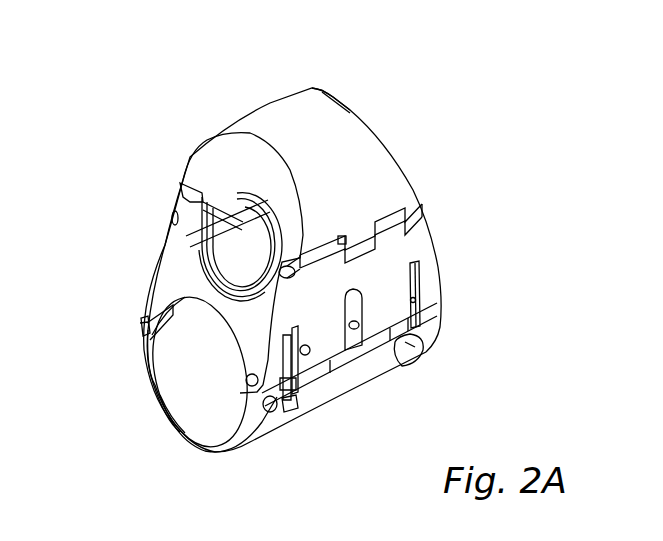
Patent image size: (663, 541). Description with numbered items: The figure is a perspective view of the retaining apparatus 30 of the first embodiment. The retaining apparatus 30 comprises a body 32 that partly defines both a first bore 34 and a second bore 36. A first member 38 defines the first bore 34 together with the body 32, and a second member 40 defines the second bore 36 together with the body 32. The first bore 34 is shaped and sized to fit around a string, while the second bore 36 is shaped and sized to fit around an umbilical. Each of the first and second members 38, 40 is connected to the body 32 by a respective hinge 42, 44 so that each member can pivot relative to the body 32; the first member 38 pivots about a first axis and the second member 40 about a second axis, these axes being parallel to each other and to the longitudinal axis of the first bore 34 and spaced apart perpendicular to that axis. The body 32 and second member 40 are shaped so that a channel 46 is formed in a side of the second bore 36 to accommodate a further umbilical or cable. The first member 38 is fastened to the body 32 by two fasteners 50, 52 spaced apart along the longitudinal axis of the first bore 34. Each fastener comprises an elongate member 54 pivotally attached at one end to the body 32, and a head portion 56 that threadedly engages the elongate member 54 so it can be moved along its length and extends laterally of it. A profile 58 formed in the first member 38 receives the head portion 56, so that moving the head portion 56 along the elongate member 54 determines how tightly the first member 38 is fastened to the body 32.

The retaining apparatus 30 is at (475, 105).
The body 32 is at (170, 267).
The first bore 34 is at (188, 382).
The second bore 36 is at (222, 257).
The first member 38 is at (183, 423).
The second member 40 is at (315, 168).
The hinge 42 is at (143, 323).
The hinge 44 is at (333, 243).
The channel 46 is at (207, 200).
The fastener 50 is at (422, 275).
The fastener 52 is at (310, 334).
The elongate member 54 is at (293, 393).
The head portion 56 is at (287, 397).
The profile 58 is at (407, 357).